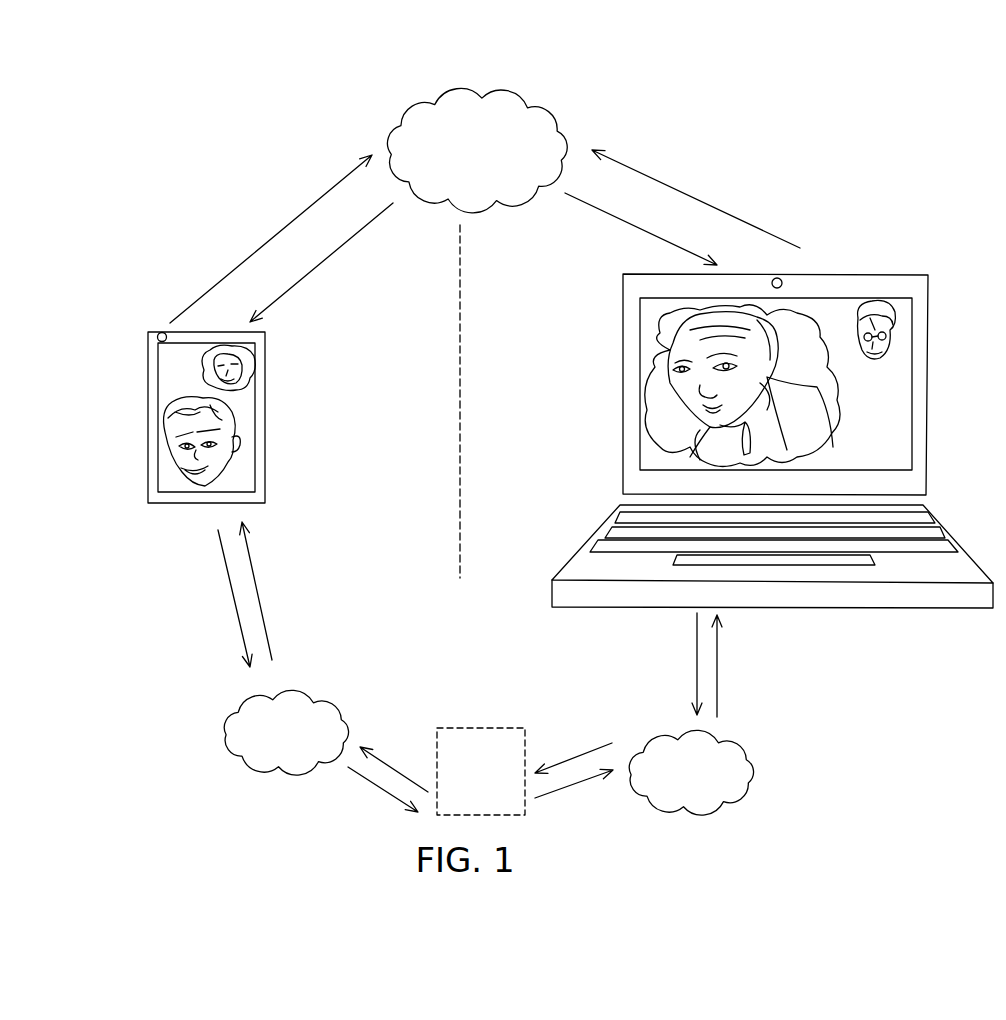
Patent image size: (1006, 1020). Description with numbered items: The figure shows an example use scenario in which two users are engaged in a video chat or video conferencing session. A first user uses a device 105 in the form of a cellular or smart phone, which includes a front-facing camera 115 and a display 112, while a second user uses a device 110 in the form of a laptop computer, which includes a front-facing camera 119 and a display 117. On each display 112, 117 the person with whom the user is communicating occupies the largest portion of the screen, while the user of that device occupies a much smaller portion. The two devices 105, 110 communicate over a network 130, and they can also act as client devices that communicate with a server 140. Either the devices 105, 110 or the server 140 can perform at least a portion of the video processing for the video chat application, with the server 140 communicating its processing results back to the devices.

The device 105 is at (201, 409).
The device 110 is at (774, 412).
The display 112 is at (249, 462).
The front-facing camera 115 is at (146, 329).
The display 117 is at (905, 420).
The front-facing camera 119 is at (788, 275).
The network 130 is at (557, 95).
The server 140 is at (528, 742).